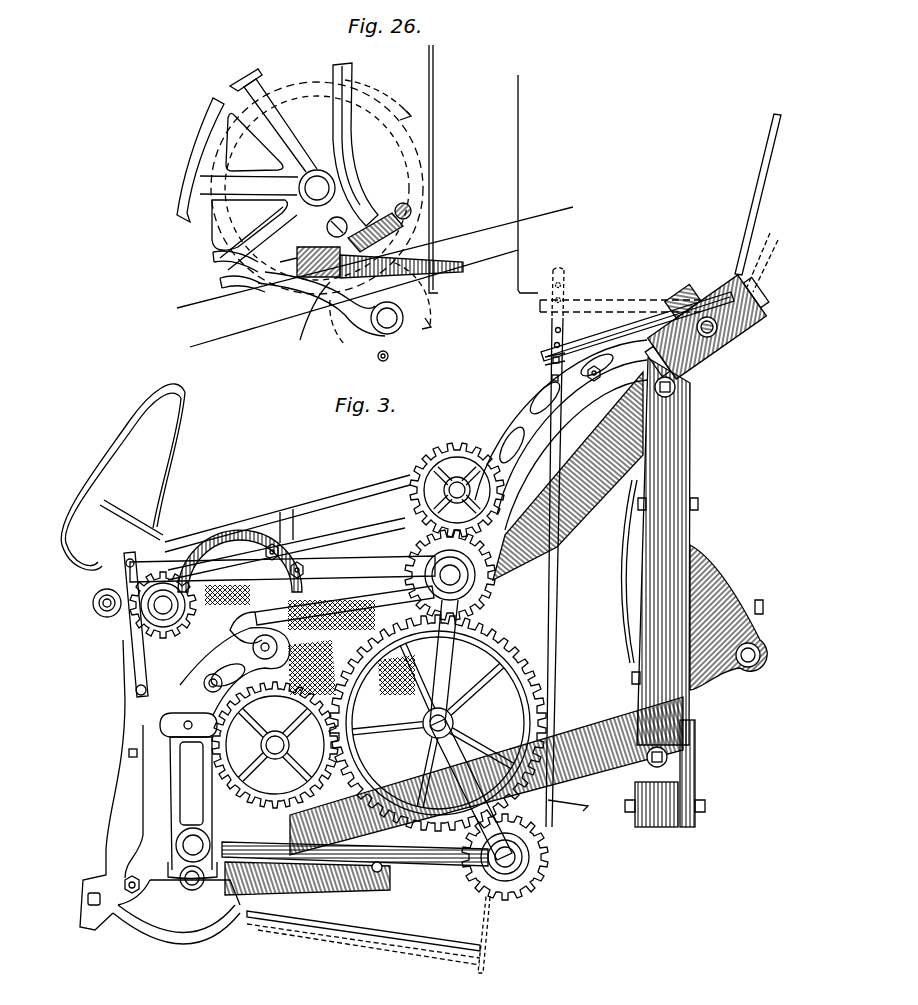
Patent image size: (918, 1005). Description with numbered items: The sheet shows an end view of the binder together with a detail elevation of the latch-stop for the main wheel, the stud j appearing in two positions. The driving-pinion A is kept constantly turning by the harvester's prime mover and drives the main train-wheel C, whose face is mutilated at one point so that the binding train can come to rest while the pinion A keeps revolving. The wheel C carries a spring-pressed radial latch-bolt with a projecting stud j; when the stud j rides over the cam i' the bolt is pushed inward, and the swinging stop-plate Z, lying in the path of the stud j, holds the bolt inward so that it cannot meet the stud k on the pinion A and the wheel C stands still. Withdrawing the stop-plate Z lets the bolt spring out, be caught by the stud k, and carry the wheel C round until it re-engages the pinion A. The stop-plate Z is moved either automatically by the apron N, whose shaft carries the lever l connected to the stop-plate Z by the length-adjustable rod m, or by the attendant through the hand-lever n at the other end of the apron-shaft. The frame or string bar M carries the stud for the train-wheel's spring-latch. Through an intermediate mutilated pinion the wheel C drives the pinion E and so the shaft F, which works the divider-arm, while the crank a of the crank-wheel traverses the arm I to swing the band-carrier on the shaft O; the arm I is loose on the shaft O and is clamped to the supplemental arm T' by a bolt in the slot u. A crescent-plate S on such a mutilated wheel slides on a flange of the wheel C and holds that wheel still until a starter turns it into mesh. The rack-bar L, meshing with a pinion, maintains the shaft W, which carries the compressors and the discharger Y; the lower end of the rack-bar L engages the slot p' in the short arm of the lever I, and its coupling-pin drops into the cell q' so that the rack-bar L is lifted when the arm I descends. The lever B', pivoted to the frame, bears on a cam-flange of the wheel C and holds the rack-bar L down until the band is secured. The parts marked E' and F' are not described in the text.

In FIG. 3, the discharger Y is at (125, 477).
In FIG. 3, the shaft F is at (457, 486).
In FIG. 3, the pinion E is at (457, 483).
In FIG. 3, the lever B' is at (332, 614).
In FIG. 3, the shaft W is at (163, 605).
In FIG. 3, the crank a is at (123, 713).
In FIG. 3, the arm I is at (200, 690).
In FIG. 3, the slot u is at (188, 769).
In FIG. 3, the supplemental arm T' is at (192, 808).
In FIG. 3, the shaft O is at (193, 859).
In FIG. 3, the rack-bar L is at (111, 785).
In FIG. 3, the crescent-plate S is at (275, 747).
In FIG. 3, the slot p' is at (176, 912).
In FIG. 3, the cell q' is at (125, 911).
In FIG. 3, the lower bar E' is at (363, 938).
In FIG. 3, the bar end piece F' is at (492, 935).
In FIG. 3, the driving-pinion A is at (525, 857).
In FIG. 26, the stud k is at (388, 360).
In FIG. 3, the stud k is at (546, 872).
In FIG. 3, the string bar M is at (471, 789).
In FIG. 26, the stop-plate Z is at (445, 262).
In FIG. 3, the stop-plate Z is at (569, 815).
In FIG. 26, the cam i' is at (368, 291).
In FIG. 3, the cam i' is at (486, 776).
In FIG. 26, the stud j is at (372, 206).
In FIG. 3, the main train-wheel C is at (500, 648).
In FIG. 26, the rod m is at (440, 169).
In FIG. 3, the rod m is at (559, 548).
In FIG. 3, the apron N is at (619, 571).
In FIG. 3, the hand-lever n is at (751, 203).
In FIG. 3, the lever l is at (637, 326).